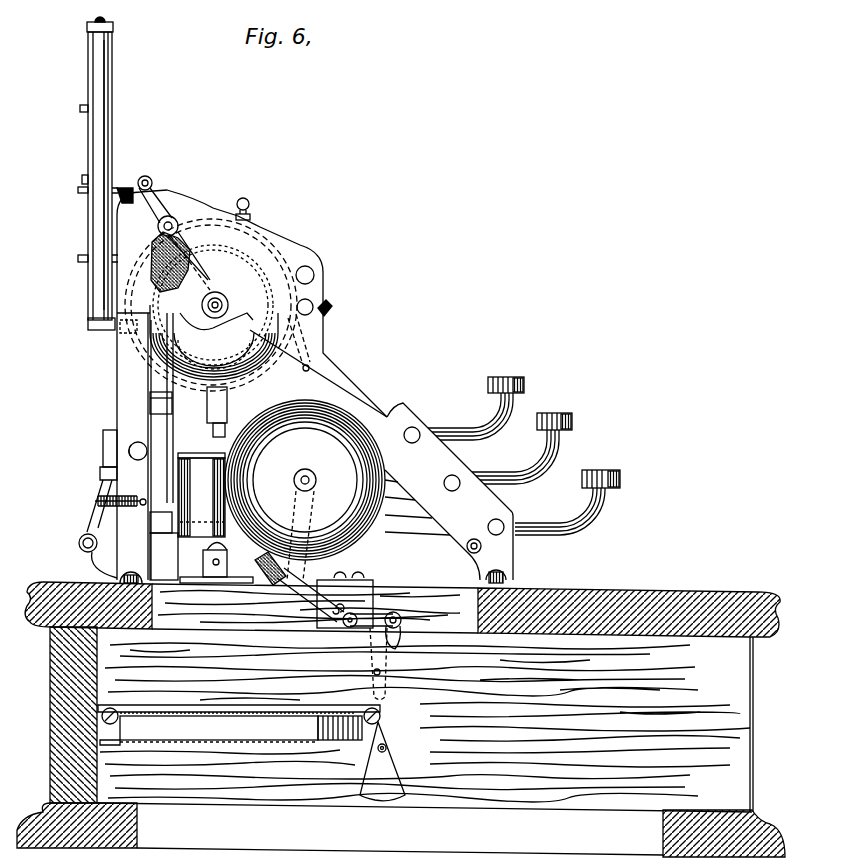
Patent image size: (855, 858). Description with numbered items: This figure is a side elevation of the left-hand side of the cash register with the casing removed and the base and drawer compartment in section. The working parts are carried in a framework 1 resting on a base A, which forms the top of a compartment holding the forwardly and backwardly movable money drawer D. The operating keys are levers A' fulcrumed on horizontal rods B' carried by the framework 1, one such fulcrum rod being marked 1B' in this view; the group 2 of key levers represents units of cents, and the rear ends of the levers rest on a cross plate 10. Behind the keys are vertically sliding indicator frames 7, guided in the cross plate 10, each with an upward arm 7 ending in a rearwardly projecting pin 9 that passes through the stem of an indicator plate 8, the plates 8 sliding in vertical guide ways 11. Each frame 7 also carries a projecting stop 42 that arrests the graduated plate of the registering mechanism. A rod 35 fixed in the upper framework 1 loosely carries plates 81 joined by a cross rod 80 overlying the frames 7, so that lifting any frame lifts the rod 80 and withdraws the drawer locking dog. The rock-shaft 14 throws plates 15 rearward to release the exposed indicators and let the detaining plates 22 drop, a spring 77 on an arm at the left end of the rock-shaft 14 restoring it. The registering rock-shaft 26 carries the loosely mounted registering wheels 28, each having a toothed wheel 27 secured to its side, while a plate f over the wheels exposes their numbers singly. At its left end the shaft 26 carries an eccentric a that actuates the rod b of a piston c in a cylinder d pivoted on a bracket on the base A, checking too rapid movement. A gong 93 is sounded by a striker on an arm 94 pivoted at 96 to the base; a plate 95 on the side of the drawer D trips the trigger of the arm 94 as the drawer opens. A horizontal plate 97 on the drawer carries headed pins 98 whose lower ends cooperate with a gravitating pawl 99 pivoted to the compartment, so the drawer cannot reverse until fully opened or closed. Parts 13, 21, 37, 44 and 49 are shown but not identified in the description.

The indicator plates 8 is at (88, 74).
The vertical guide ways 11 is at (104, 85).
The stop 13 is at (83, 112).
The indicator frame 7 is at (125, 190).
The rearwardly projecting pin 9 is at (84, 188).
The cross plate 10 is at (103, 330).
The cross rod 80 is at (148, 178).
The plates 81 is at (158, 207).
The rod 35 is at (180, 222).
The toothed wheel 27 is at (180, 262).
The rock-shaft 26 is at (215, 316).
The spring 37 is at (150, 310).
The registering wheel 28 is at (153, 353).
The screw hole 44 is at (314, 275).
The stud 49 is at (320, 305).
The framework 1 is at (252, 385).
The projecting stop 42 is at (162, 402).
The detaining plates 22 is at (103, 442).
The screw 21 is at (136, 441).
The plates 15 is at (100, 468).
The spring 77 is at (120, 507).
The rock-shaft 14 is at (84, 553).
The gong 93 is at (305, 490).
The striker arm 94 is at (310, 598).
The pivot 96 is at (345, 629).
The plate 95 is at (368, 645).
The horizontal plate 97 is at (239, 725).
The pins 98 is at (343, 745).
The gravitating pawl 99 is at (382, 761).
The group of key levers 2 is at (530, 456).
The plate f is at (252, 223).
The eccentric a is at (245, 380).
The rod b is at (217, 416).
The cylinder d is at (201, 495).
The piston c is at (201, 547).
The base A is at (401, 711).
The money drawer D is at (425, 722).
The key levers A' is at (449, 493).
The horizontal rods B' is at (482, 529).
The hole 1B' is at (432, 459).